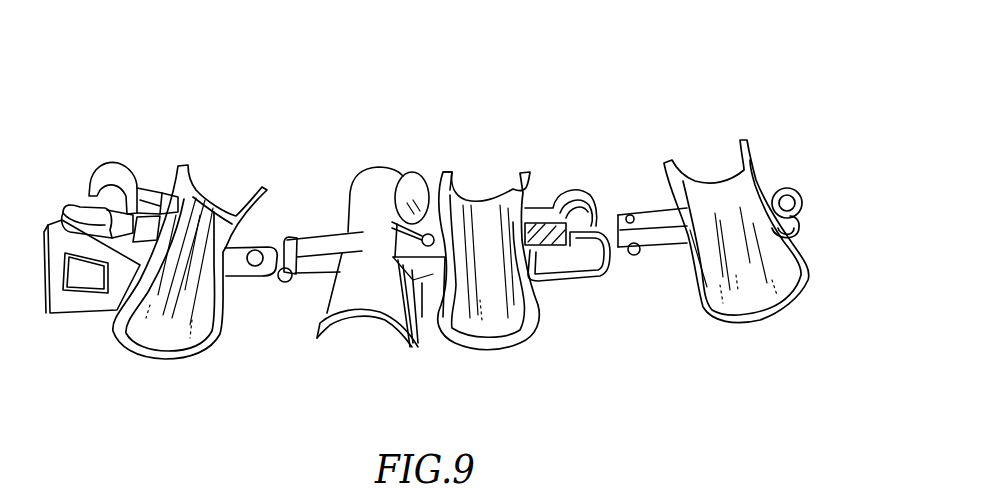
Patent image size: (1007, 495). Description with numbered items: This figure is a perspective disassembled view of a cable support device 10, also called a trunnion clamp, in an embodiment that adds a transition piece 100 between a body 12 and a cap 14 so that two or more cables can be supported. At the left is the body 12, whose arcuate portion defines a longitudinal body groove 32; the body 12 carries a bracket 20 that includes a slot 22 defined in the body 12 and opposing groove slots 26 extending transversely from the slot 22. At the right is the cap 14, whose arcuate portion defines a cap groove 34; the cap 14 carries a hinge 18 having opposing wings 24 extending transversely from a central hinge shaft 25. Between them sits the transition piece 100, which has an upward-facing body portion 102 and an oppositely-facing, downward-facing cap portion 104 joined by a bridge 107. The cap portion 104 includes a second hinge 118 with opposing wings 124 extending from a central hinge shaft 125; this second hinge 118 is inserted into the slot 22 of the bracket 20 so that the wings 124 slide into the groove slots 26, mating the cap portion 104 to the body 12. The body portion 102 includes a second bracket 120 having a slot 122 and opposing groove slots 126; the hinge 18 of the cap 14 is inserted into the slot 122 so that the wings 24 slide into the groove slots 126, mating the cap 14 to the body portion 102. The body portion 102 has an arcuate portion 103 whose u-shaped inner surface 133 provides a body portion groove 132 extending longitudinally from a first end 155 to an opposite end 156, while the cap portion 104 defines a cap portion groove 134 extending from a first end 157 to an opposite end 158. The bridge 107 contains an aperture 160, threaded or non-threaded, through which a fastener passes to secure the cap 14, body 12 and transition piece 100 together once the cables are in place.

The cable support device 10 is at (604, 73).
The body 12 is at (131, 367).
The cap 14 is at (770, 163).
The hinge 18 is at (662, 250).
The bracket 20 is at (121, 158).
The slot 22 is at (172, 204).
The wings 24 is at (628, 211).
The central hinge shaft 25 is at (663, 224).
The groove slots 26 is at (85, 197).
The body groove 32 is at (175, 303).
The cap groove 34 is at (728, 205).
The transition piece 100 is at (450, 112).
The body portion 102 is at (538, 340).
The arcuate portion 103 is at (480, 350).
The cap portion 104 is at (366, 168).
The bridge 107 is at (429, 268).
The second hinge 118 is at (310, 236).
The second bracket 120 is at (575, 190).
The slot 122 is at (550, 208).
The wings 124 is at (286, 206).
The central hinge shaft 125 is at (330, 243).
The groove slots 126 is at (600, 188).
The body portion groove 132 is at (484, 197).
The u-shaped inner surface 133 is at (543, 290).
The cap portion groove 134 is at (363, 323).
The first end 155 is at (510, 350).
The opposite end 156 is at (488, 222).
The first end 157 is at (336, 327).
The opposite end 158 is at (371, 188).
The aperture 160 is at (404, 173).